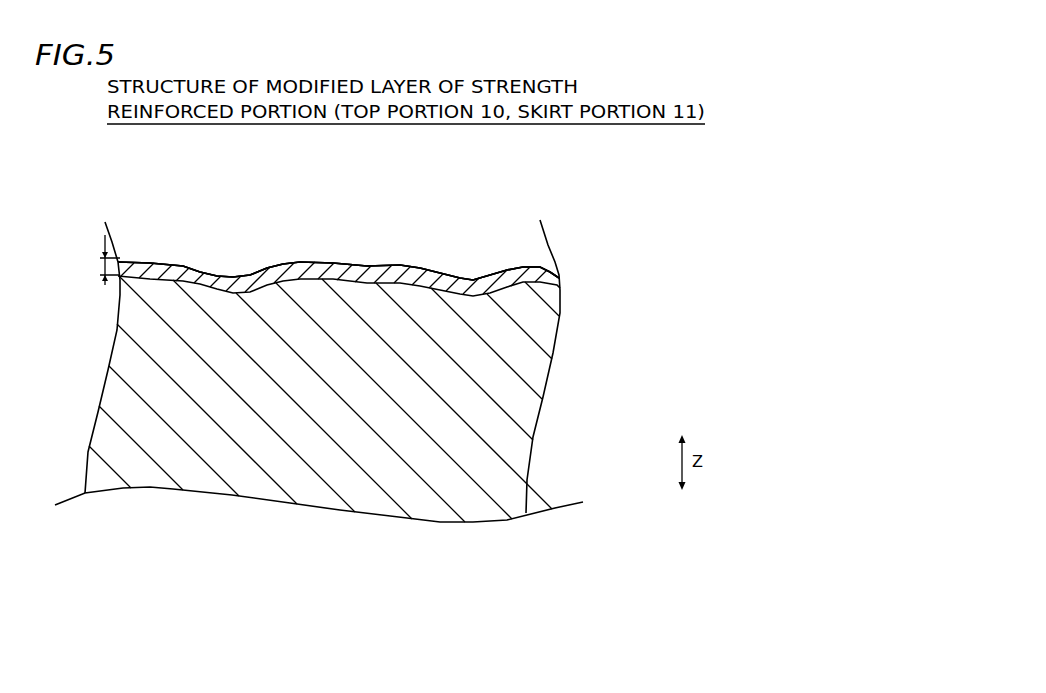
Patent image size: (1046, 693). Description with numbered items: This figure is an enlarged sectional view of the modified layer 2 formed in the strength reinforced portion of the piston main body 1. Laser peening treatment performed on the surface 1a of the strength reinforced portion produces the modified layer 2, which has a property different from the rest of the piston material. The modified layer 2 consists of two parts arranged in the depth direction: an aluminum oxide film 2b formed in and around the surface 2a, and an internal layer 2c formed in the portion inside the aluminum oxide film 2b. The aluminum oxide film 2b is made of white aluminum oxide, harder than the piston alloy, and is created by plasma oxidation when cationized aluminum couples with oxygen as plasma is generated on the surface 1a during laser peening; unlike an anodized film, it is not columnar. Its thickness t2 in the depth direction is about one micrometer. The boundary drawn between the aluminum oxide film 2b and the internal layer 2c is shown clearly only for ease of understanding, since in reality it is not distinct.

The piston main body 1 is at (564, 213).
The surface of the strength reinforced portion 1a is at (330, 262).
The surface of the modified layer 2a is at (330, 262).
The modified layer 2 is at (762, 418).
The aluminum oxide film 2b is at (535, 267).
The internal layer 2c is at (533, 400).
The thickness of the aluminum oxide film t2 is at (102, 260).